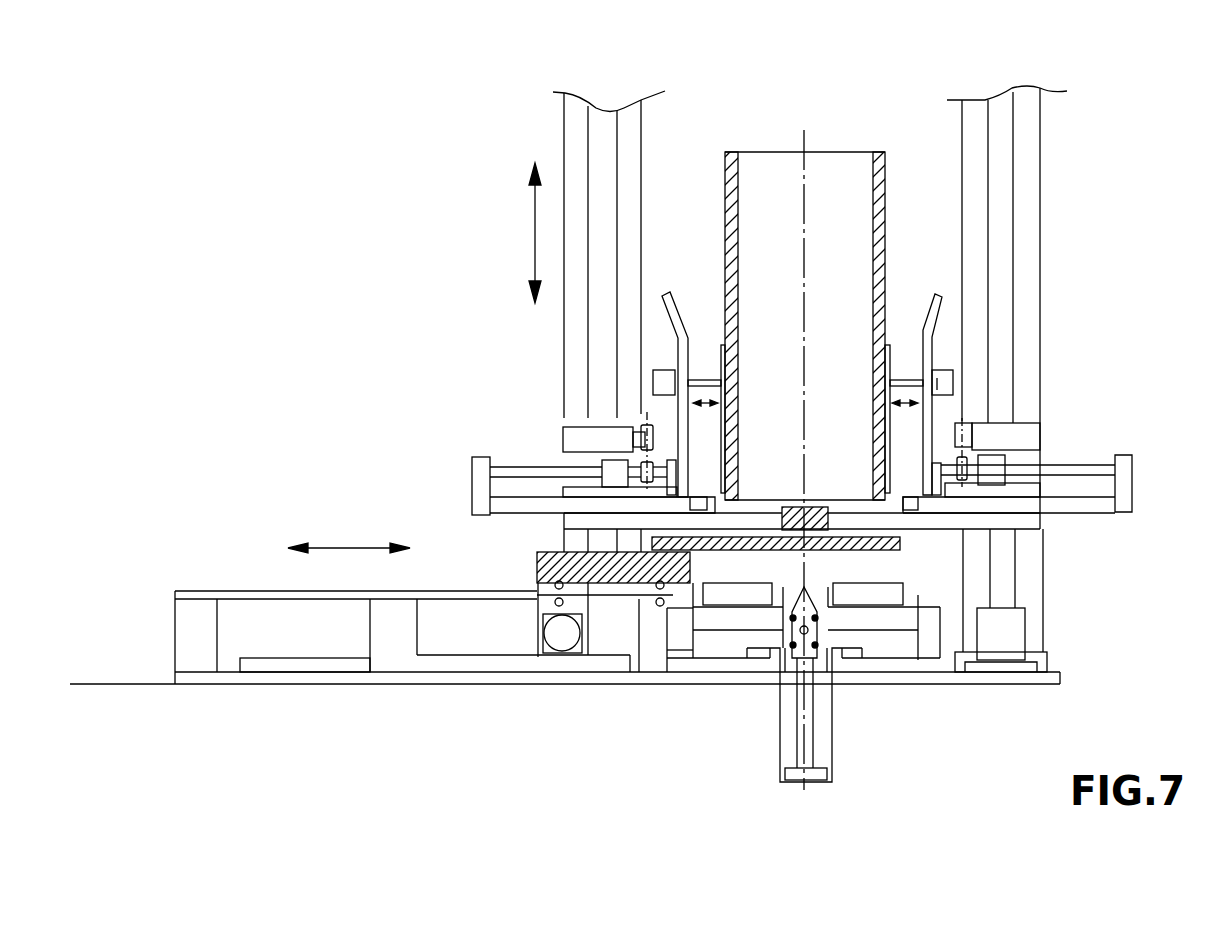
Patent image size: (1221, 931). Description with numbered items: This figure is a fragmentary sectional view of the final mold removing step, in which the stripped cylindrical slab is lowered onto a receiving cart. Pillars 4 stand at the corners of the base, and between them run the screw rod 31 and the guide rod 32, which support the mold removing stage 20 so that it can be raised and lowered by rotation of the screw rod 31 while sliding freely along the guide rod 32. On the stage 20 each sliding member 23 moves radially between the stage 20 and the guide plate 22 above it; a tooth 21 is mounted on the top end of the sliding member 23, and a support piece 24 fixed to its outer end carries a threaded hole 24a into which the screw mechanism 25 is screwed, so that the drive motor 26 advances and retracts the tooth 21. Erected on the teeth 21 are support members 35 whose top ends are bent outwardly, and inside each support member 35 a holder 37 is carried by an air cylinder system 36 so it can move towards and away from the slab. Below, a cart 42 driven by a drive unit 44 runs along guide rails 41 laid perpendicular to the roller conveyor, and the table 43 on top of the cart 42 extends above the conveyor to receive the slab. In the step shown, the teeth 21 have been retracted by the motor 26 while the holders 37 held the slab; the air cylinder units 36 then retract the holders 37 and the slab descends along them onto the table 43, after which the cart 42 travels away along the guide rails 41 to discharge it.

The pillar 4 is at (1033, 176).
The mold removing stage 20 is at (950, 523).
The tooth 21 is at (912, 503).
The guide plate 22 is at (1027, 492).
The sliding member 23 is at (1097, 506).
The support piece 24 is at (1135, 506).
The threaded hole 24a is at (1135, 468).
The screw mechanism 25 is at (1083, 468).
The drive motor 26 is at (1027, 440).
The screw rod 31 is at (1000, 262).
The guide rod 32 is at (607, 383).
The support member 35 is at (927, 318).
The air cylinder system 36 is at (948, 382).
The holder 37 is at (892, 355).
The guide rail 41 is at (445, 600).
The cart 42 is at (612, 575).
The table 43 is at (725, 555).
The drive unit 44 is at (558, 642).